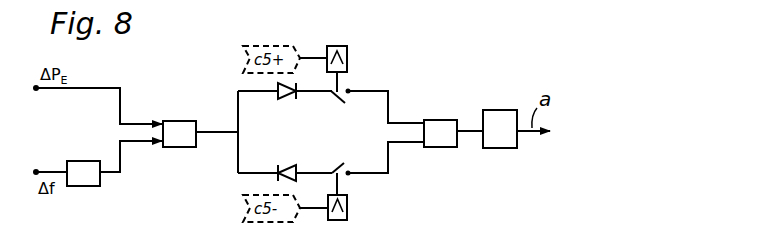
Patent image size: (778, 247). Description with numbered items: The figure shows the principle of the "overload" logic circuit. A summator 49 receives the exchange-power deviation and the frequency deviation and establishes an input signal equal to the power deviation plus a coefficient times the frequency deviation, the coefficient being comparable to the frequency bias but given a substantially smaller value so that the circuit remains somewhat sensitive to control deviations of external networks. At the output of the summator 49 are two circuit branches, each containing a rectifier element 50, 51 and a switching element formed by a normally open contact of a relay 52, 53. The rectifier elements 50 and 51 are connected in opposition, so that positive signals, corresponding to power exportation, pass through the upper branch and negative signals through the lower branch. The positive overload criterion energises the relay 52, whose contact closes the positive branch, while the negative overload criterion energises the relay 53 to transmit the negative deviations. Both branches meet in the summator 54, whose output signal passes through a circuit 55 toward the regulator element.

The summator 49 is at (181, 115).
The rectifier element 50 is at (289, 106).
The rectifier element 51 is at (288, 166).
The relay 52 is at (346, 86).
The relay 53 is at (346, 185).
The summator 54 is at (438, 119).
The circuit 55 is at (504, 110).